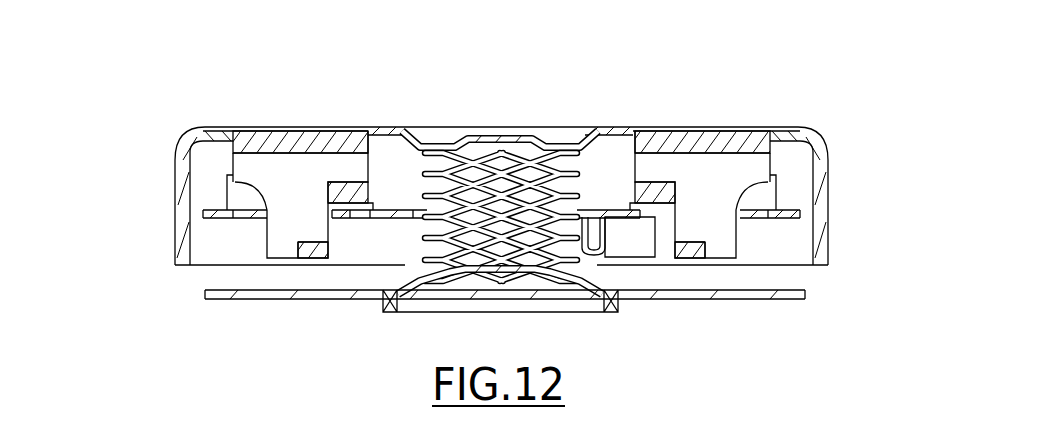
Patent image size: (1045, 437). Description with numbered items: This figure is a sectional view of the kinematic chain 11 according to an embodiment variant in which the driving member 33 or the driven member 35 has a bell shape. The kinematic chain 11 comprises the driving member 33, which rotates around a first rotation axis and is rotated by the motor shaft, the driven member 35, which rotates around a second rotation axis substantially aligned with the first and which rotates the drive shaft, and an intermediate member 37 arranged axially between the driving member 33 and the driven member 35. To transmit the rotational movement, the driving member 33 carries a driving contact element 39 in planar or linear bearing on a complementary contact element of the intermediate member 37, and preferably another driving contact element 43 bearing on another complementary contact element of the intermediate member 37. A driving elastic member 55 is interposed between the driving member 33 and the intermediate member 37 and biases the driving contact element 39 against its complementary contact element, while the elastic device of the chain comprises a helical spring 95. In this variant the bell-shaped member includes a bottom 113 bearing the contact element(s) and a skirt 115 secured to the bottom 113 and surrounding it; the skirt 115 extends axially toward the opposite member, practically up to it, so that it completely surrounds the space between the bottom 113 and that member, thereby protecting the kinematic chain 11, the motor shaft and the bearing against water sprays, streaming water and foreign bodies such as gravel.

The kinematic chain 11 is at (489, 143).
The driving member 33 is at (555, 143).
The driven member 35 is at (697, 313).
The intermediate member 37 is at (800, 212).
The driving contact element 39 is at (705, 214).
The driving contact element 43 is at (297, 213).
The driving elastic member 55 is at (395, 138).
The helical spring 95 is at (580, 207).
The bottom 113 is at (620, 172).
The skirt 115 is at (825, 181).